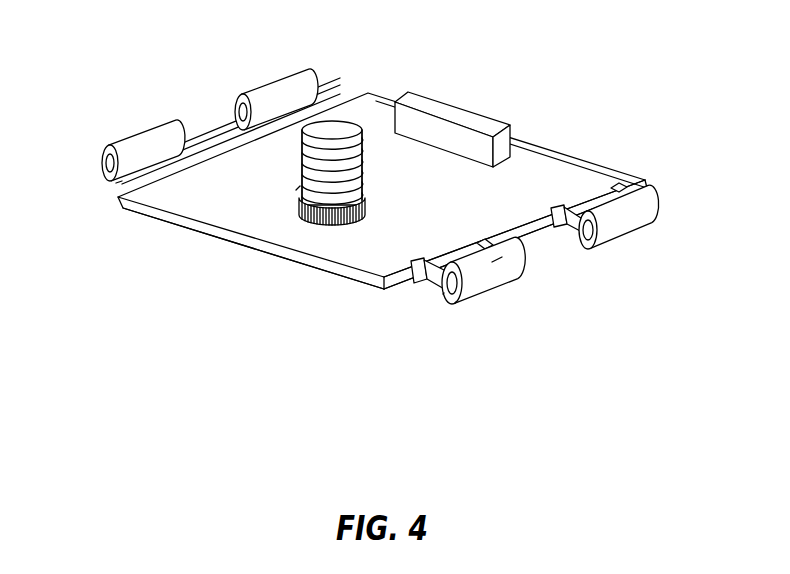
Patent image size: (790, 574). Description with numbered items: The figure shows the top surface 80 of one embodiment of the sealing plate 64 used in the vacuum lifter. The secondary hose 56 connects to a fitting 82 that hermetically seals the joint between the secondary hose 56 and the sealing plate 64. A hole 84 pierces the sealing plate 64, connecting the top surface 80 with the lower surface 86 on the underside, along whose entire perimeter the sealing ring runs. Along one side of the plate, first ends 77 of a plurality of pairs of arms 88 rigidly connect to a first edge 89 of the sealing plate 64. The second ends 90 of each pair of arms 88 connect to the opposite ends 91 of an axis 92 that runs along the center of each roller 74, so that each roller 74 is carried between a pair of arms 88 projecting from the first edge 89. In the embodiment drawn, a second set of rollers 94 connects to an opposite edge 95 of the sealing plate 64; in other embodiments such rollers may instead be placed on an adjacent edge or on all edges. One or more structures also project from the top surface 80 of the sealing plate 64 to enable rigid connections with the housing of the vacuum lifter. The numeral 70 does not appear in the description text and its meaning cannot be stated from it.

The secondary hose 56 is at (366, 152).
The sealing plate 64 is at (560, 93).
The base plate 70 is at (388, 292).
The roller 74 is at (490, 287).
The first ends 77 is at (553, 218).
The top surface 80 is at (233, 153).
The fitting 82 is at (303, 215).
The hole 84 is at (304, 184).
The lower surface 86 is at (337, 280).
The arms 88 is at (553, 215).
The first edge 89 is at (614, 172).
The second ends 90 is at (390, 294).
The opposite ends 91 is at (443, 294).
The axis 92 is at (455, 303).
The second set of rollers 94 is at (286, 92).
The opposite edge 95 is at (118, 197).